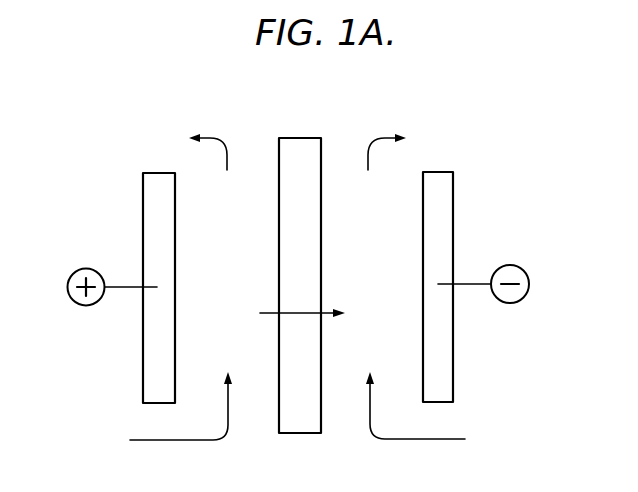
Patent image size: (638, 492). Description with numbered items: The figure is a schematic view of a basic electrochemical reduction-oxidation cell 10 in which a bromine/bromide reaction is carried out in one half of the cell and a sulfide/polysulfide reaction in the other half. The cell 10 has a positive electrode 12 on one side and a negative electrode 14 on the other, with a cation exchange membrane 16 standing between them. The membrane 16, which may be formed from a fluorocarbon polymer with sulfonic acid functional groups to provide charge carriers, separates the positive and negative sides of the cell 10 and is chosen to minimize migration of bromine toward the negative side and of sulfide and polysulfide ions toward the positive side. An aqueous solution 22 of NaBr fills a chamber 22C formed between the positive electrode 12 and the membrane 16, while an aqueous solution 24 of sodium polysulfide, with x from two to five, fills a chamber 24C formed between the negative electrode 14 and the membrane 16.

The cell 10 is at (219, 98).
The positive electrode 12 is at (148, 191).
The negative electrode 14 is at (441, 183).
The cation exchange membrane 16 is at (300, 145).
The aqueous solution of NaBr 22 is at (63, 428).
The chamber 22C is at (274, 279).
The aqueous solution of Na2Sx 24 is at (520, 415).
The chamber 24C is at (371, 252).